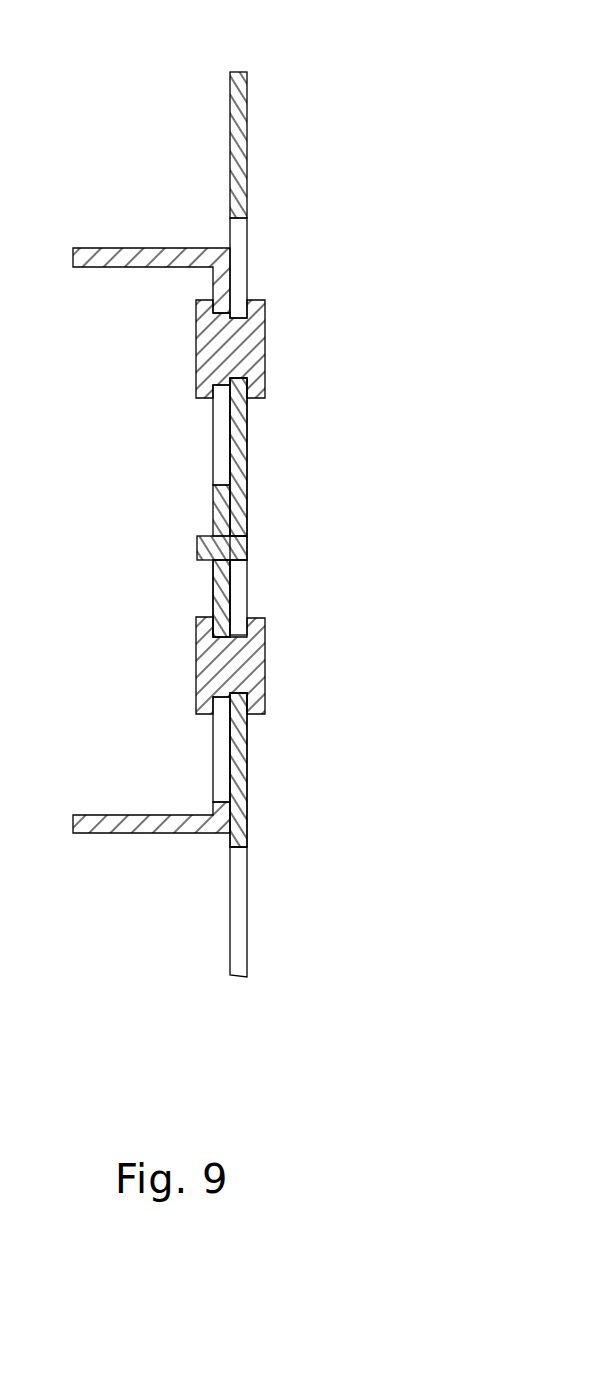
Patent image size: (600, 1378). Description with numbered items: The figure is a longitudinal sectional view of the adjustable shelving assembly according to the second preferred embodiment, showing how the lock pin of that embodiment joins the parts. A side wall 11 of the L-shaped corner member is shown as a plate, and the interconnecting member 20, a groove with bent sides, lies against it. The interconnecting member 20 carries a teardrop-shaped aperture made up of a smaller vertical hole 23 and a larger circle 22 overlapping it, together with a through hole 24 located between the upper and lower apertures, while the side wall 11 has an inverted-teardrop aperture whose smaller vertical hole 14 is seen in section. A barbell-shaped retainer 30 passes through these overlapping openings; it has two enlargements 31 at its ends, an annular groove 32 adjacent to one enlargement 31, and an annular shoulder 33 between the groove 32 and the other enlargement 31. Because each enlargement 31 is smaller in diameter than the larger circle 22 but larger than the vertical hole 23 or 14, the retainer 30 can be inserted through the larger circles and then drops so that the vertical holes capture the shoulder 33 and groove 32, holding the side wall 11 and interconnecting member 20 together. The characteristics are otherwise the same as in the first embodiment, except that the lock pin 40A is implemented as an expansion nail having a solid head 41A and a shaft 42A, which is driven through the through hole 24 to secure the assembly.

The side wall 11 is at (247, 100).
The interconnecting member 20 is at (132, 842).
The larger circle 22 is at (218, 438).
The through hole 24 is at (215, 527).
The retainer 30 is at (284, 333).
The enlargement 31 is at (265, 655).
The annular groove 32 is at (247, 725).
The vertical hole 14 is at (238, 612).
The annular shoulder 33 is at (215, 613).
The vertical hole 23 is at (221, 598).
The lock pin 40A is at (239, 554).
The solid head 41A is at (240, 563).
The shaft 42A is at (200, 548).